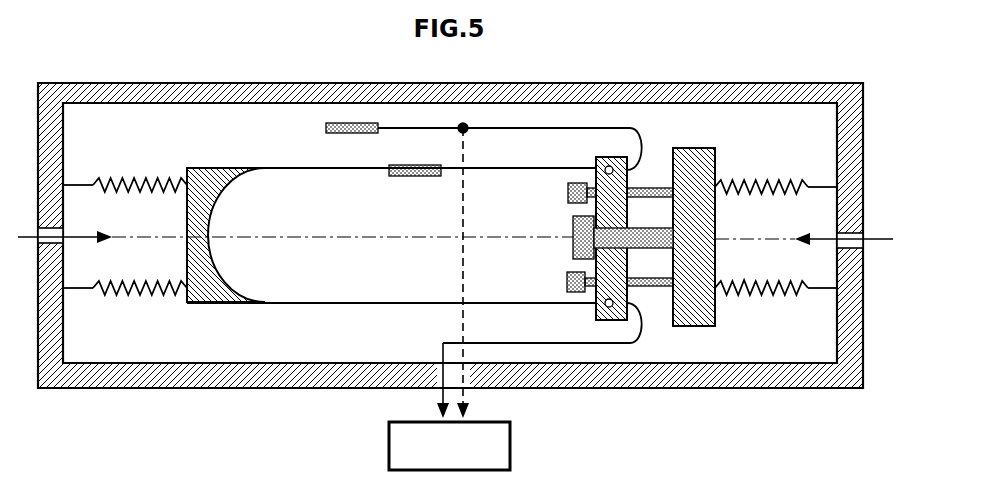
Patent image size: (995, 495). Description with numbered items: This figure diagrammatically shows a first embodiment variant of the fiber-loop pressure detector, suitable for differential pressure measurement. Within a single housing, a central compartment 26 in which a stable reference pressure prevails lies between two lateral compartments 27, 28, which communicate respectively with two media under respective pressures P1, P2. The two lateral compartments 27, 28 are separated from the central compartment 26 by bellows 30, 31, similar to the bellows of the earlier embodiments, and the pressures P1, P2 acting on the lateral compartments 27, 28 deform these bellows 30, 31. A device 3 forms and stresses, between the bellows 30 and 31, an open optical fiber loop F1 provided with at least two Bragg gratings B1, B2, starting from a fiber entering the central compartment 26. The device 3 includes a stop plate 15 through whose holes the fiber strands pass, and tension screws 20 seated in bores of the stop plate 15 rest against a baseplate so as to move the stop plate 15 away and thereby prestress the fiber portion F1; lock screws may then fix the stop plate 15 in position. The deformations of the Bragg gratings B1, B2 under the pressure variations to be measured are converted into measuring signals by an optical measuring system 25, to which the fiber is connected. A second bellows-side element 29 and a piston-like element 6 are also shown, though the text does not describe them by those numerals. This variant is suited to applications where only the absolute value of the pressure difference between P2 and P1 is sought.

The device 3 is at (298, 146).
The piston 6 is at (205, 173).
The stop plate 15 is at (606, 163).
The tension screws 20 is at (568, 193).
The optical system 25 is at (449, 299).
The central compartment 26 is at (453, 221).
The lateral compartment 27 is at (94, 228).
The lateral compartment 28 is at (807, 230).
The spring chamber 29 is at (204, 135).
The bellows 30 is at (113, 175).
The bellows 31 is at (797, 182).
The Bragg grating B1 is at (515, 244).
The Bragg grating B2 is at (362, 123).
The open optical fiber loop F1 is at (331, 325).
The pressure P1 is at (65, 228).
The pressure P2 is at (844, 233).